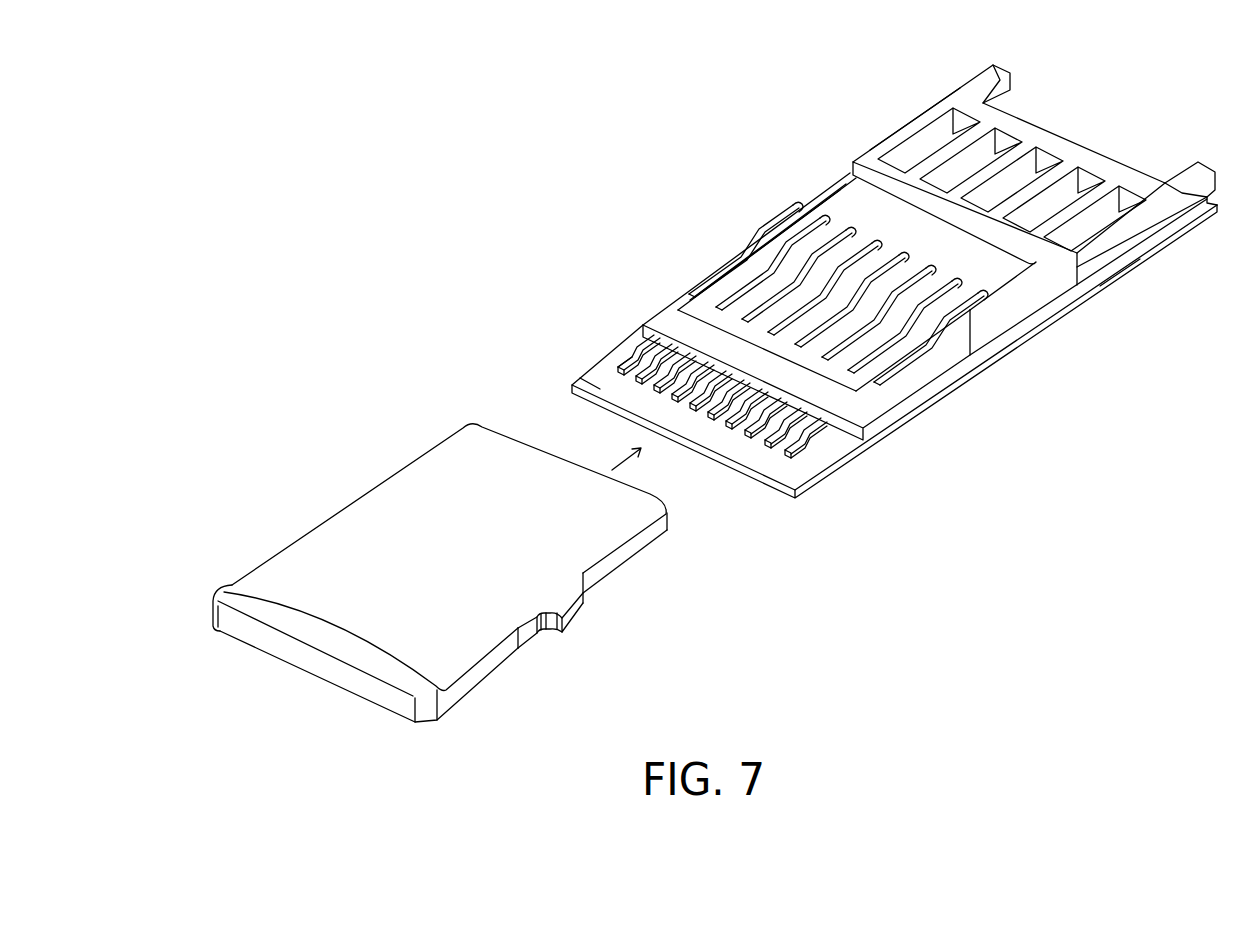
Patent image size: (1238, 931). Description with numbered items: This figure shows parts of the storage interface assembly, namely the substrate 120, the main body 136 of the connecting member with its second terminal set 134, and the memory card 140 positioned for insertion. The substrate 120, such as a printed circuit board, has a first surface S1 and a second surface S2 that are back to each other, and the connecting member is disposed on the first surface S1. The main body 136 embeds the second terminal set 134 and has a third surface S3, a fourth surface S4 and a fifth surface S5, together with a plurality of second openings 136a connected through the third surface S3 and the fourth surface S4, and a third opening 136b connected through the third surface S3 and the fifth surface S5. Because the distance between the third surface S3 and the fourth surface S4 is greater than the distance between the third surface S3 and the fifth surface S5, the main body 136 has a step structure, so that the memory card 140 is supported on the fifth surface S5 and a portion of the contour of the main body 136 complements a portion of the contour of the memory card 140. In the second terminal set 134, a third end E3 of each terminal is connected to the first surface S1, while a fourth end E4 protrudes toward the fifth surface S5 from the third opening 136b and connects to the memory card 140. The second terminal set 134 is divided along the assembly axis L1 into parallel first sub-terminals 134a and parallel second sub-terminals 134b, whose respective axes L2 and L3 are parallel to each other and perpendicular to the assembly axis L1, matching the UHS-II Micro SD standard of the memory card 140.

The memory card 140 is at (405, 488).
The substrate 120 is at (873, 456).
The main body 136 is at (1173, 218).
The second openings 136a is at (916, 146).
The third opening 136b is at (886, 379).
The second terminal set 134 is at (803, 297).
The first sub-terminals 134a is at (733, 256).
The second sub-terminals 134b is at (703, 297).
The first surface S1 is at (592, 376).
The second surface S2 is at (803, 502).
The third surface S3 is at (1132, 274).
The fourth surface S4 is at (927, 104).
The fifth surface S5 is at (846, 186).
The third end E3 is at (627, 355).
The fourth end E4 is at (821, 202).
The assembly axis L1 is at (1117, 117).
The axis of the first sub-terminals L2 is at (750, 202).
The axis of the second sub-terminals L3 is at (693, 260).